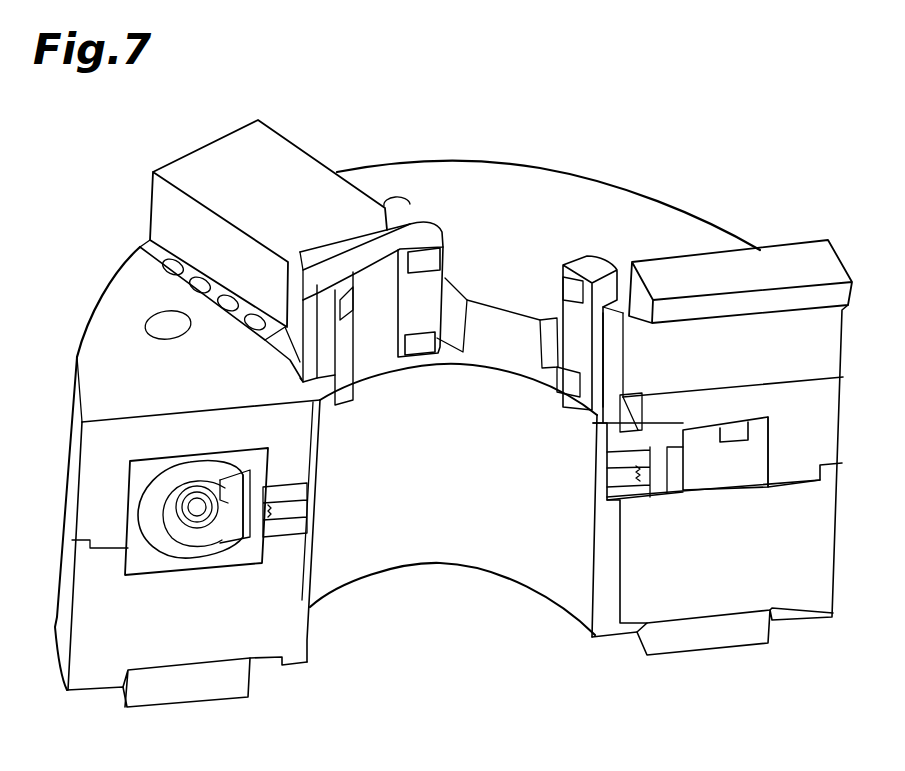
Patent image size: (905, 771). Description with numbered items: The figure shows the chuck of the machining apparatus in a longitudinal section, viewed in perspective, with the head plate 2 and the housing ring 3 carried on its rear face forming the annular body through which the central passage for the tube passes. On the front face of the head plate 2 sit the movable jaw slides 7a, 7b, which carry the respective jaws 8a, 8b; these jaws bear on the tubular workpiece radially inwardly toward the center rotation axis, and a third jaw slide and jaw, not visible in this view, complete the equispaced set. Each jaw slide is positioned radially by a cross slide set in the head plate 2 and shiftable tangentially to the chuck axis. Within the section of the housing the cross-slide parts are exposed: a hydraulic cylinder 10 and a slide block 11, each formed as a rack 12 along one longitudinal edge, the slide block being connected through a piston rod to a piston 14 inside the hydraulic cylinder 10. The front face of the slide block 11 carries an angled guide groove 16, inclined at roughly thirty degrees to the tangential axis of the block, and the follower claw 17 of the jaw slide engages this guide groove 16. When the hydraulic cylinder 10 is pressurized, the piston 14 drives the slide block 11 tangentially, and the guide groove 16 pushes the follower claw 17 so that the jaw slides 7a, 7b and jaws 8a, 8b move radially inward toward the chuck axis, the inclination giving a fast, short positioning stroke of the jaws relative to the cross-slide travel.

The head plate 2 is at (497, 160).
The housing ring 3 is at (803, 595).
The jaw slide 7a is at (786, 242).
The jaw slide 7b is at (296, 144).
The jaw 8a is at (593, 267).
The jaw 8b is at (415, 232).
The hydraulic cylinder 10 is at (140, 555).
The slide block 11 is at (735, 467).
The rack 12 is at (678, 490).
The piston 14 is at (200, 537).
The guide groove 16 is at (757, 433).
The follower claw 17 is at (735, 430).